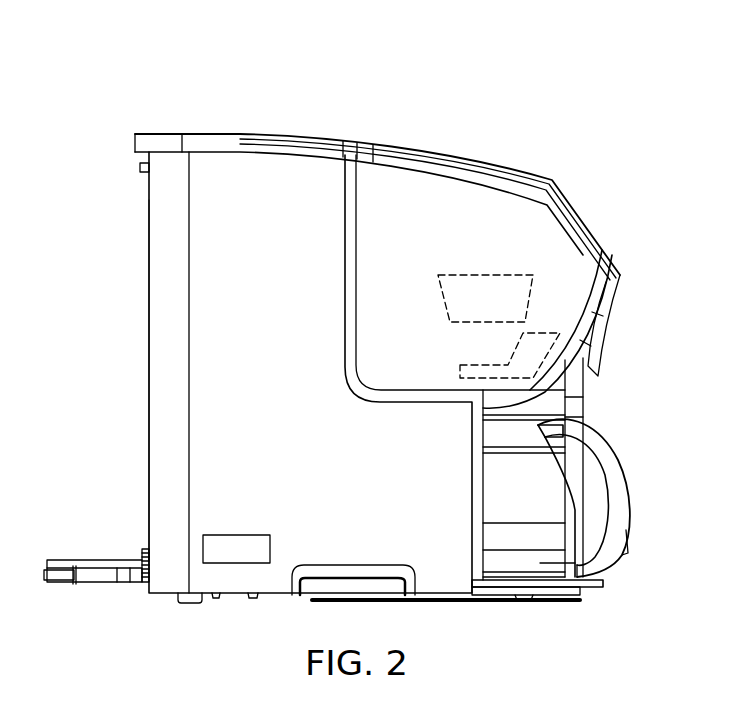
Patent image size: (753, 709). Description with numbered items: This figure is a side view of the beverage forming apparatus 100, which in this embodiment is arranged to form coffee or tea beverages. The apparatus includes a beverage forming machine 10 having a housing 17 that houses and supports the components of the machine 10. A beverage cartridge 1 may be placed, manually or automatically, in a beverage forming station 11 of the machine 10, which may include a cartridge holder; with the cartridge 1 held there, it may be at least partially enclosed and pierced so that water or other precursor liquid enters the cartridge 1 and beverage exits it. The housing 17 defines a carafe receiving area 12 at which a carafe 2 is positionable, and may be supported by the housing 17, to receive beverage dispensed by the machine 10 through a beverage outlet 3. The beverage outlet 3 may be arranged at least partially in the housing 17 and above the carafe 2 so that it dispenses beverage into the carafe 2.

The beverage forming apparatus 100 is at (110, 108).
The beverage forming machine 10 is at (606, 219).
The beverage forming station 11 is at (545, 275).
The beverage cartridge 1 is at (490, 288).
The beverage outlet 3 is at (460, 372).
The housing 17 is at (148, 362).
The carafe 2 is at (618, 493).
The carafe receiving area 12 is at (616, 576).